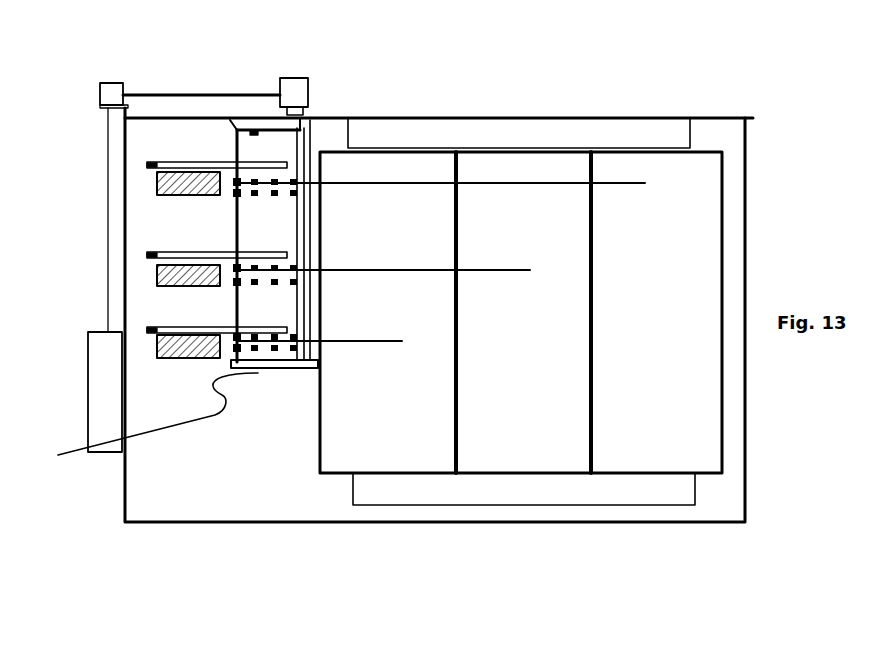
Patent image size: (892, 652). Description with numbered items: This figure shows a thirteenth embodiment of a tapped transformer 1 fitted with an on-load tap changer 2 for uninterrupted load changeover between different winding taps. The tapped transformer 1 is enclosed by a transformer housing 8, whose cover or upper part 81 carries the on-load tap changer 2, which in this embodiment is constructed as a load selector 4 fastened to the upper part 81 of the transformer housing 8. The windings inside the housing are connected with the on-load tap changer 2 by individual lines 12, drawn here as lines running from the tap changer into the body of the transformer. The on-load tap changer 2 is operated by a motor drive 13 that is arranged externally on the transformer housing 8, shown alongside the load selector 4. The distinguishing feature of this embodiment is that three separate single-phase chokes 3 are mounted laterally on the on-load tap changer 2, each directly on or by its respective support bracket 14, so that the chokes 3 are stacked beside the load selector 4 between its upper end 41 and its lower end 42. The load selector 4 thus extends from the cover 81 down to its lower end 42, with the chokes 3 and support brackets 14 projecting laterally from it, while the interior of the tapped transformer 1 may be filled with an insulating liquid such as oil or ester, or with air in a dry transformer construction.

The tapped transformer 1 is at (768, 168).
The on-load tap changer 2 is at (312, 134).
The choke 3 is at (158, 337).
The load selector 4 is at (239, 148).
The transformer housing 8 is at (428, 116).
The cover or upper part 81 is at (387, 125).
The individual lines 12 is at (552, 183).
The motor drive 13 is at (107, 368).
The support bracket 14 is at (147, 165).
The upper end 41 is at (242, 118).
The lower end 42 is at (136, 420).